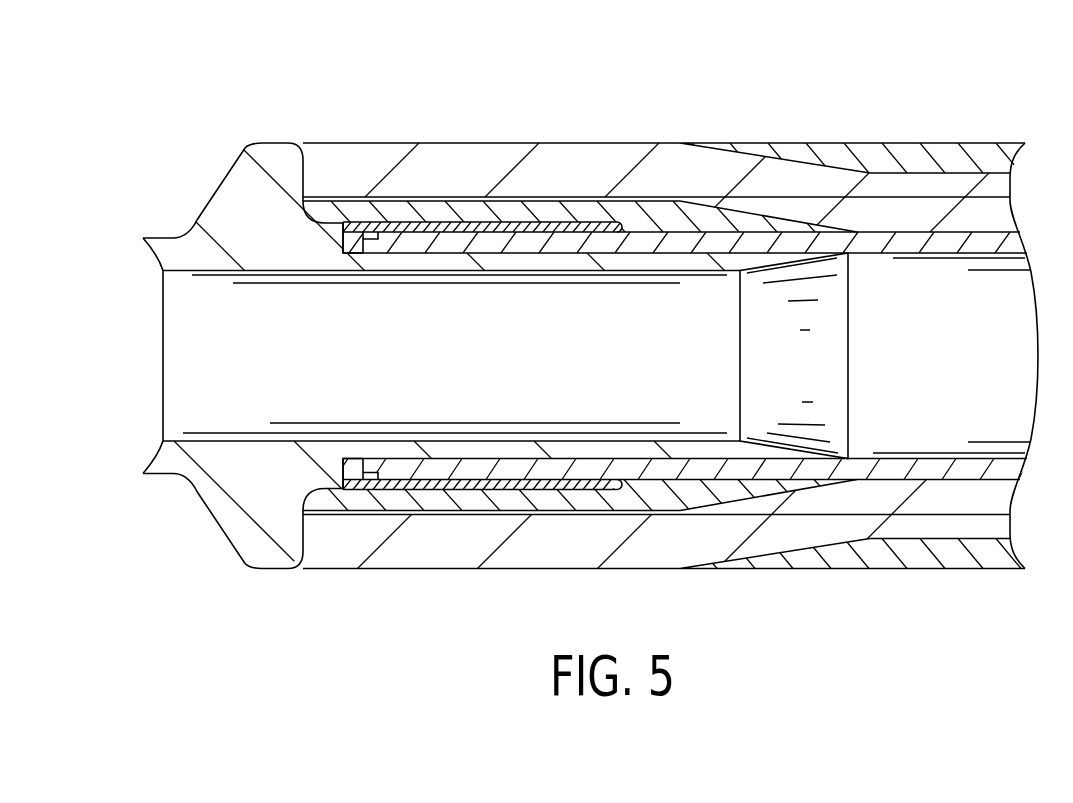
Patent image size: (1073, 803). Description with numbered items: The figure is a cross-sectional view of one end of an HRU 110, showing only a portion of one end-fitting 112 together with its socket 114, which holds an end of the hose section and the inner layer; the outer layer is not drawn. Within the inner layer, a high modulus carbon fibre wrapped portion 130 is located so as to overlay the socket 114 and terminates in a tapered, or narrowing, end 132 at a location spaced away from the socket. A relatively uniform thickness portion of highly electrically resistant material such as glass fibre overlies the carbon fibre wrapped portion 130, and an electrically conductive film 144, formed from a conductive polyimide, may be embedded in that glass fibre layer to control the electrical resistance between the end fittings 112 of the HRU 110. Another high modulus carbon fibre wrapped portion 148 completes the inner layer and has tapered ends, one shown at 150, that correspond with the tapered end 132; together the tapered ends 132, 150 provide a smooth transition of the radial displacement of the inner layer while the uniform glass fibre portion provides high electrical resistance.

The HRU 110 is at (568, 63).
The end-fitting 112 is at (232, 194).
The socket 114 is at (448, 228).
The high modulus carbon fibre wrapped portion 130 is at (518, 212).
The tapered end 132 is at (735, 220).
The electrically conductive film 144 is at (348, 195).
The high modulus carbon fibre wrapped portion 148 is at (985, 143).
The tapered end 150 is at (787, 148).